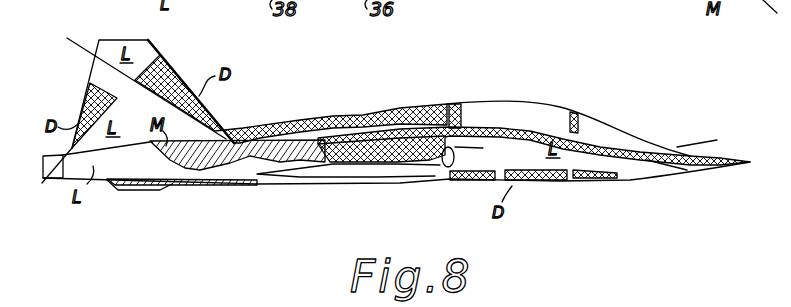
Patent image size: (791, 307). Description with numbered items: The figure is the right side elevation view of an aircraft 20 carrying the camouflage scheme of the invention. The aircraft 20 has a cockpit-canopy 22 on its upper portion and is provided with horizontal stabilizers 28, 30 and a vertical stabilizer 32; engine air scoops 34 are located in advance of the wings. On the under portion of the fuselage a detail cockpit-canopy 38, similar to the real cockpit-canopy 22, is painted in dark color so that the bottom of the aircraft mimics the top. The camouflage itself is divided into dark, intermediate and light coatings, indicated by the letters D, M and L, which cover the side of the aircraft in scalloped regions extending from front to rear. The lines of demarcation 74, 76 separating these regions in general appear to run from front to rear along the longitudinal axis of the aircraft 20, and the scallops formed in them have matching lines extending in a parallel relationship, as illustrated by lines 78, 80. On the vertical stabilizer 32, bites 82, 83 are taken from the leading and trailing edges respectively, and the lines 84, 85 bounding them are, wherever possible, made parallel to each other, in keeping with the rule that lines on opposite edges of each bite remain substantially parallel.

The aircraft 20 is at (597, 100).
The cockpit-canopy 22 is at (550, 112).
The horizontal stabilizer 28 is at (133, 192).
The horizontal stabilizer 30 is at (658, 0).
The vertical stabilizer 32 is at (122, 40).
The engine air scoop 34 is at (438, 186).
The detail cockpit-canopy 38 is at (541, 178).
The line of demarcation 74 is at (606, 143).
The line of demarcation 76 is at (222, 175).
The matching line 78 is at (202, 187).
The matching line 80 is at (300, 120).
The bite 82 is at (170, 80).
The bite 83 is at (80, 26).
The line 84 is at (90, 98).
The line 85 is at (90, 83).